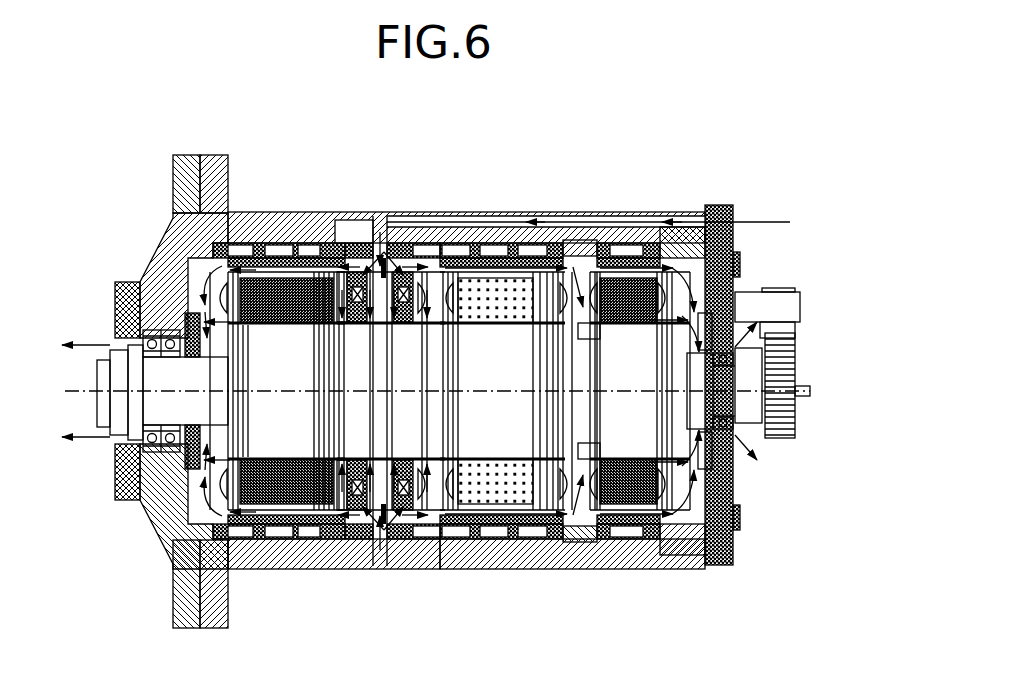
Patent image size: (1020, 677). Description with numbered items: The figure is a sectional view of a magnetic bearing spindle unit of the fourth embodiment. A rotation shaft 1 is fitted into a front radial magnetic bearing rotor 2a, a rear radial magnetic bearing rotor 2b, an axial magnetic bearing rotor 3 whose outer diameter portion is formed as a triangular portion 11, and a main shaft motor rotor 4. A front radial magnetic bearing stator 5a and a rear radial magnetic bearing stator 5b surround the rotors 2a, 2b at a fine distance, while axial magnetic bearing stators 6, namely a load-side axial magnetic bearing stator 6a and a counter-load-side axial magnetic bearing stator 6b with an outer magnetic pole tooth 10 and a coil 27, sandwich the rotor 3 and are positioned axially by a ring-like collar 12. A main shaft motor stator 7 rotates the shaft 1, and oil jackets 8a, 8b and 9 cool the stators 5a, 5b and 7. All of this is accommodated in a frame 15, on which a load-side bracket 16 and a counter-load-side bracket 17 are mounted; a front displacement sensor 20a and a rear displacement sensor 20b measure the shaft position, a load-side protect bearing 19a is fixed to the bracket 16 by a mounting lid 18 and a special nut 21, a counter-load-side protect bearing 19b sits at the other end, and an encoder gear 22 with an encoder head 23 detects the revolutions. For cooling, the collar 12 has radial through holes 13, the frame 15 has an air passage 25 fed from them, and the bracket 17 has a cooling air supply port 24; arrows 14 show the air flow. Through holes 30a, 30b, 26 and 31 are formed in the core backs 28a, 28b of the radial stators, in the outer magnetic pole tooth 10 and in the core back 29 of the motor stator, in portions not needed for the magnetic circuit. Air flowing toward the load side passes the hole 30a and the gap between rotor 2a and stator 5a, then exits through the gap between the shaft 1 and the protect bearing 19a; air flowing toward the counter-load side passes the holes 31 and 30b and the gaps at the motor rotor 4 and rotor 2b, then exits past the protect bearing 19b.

The rotation shaft 1 is at (95, 352).
The front radial magnetic bearing rotor 2a is at (267, 340).
The rear radial magnetic bearing rotor 2b is at (722, 250).
The axial magnetic bearing rotor 3 is at (373, 570).
The main shaft motor rotor 4 is at (497, 357).
The front radial magnetic bearing stator 5a is at (277, 280).
The rear radial magnetic bearing stator 5b is at (607, 290).
The axial magnetic bearing stators 6 is at (310, 614).
The load-side axial magnetic bearing stator 6a is at (345, 540).
The counter-load-side axial magnetic bearing stator 6b is at (397, 570).
The main shaft motor stator 7 is at (540, 212).
The oil jacket 8a is at (250, 570).
The oil jacket 8b is at (603, 570).
The oil jacket 9 is at (477, 570).
The outer magnetic pole tooth 10 is at (340, 262).
The triangular portion 11 is at (347, 243).
The collar 12 is at (370, 238).
The through holes 13 is at (386, 225).
The arrows 14 is at (173, 543).
The frame 15 is at (220, 167).
The load-side bracket 16 is at (183, 190).
The counter-load-side bracket 17 is at (722, 277).
The mounting lid 18 is at (113, 310).
The load-side protect bearing 19a is at (148, 455).
The counter-load-side protect bearing 19b is at (733, 480).
The front displacement sensor 20a is at (185, 500).
The rear displacement sensor 20b is at (735, 505).
The special nut 21 is at (120, 413).
The encoder gear 22 is at (780, 350).
The encoder head 23 is at (787, 310).
The cooling air supply port 24 is at (738, 222).
The air passage 25 is at (640, 225).
The through hole 26 is at (412, 250).
The coil 27 is at (420, 570).
The core back 28a is at (276, 250).
The core back 28b is at (640, 290).
The core back 29 is at (523, 290).
The through hole 30a is at (285, 545).
The through hole 30b is at (627, 568).
The through holes 31 is at (517, 570).